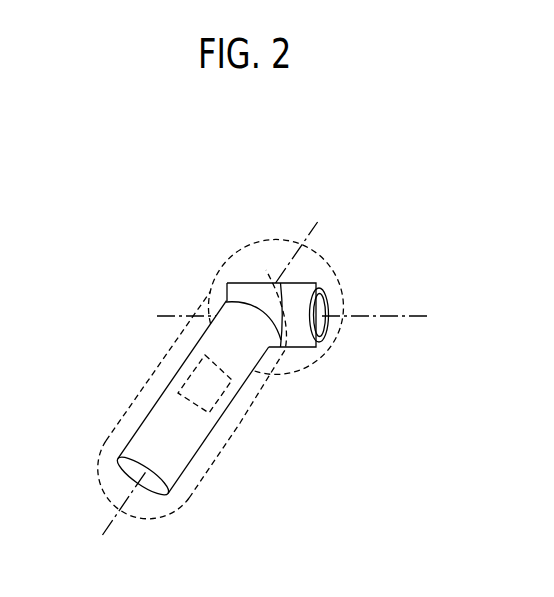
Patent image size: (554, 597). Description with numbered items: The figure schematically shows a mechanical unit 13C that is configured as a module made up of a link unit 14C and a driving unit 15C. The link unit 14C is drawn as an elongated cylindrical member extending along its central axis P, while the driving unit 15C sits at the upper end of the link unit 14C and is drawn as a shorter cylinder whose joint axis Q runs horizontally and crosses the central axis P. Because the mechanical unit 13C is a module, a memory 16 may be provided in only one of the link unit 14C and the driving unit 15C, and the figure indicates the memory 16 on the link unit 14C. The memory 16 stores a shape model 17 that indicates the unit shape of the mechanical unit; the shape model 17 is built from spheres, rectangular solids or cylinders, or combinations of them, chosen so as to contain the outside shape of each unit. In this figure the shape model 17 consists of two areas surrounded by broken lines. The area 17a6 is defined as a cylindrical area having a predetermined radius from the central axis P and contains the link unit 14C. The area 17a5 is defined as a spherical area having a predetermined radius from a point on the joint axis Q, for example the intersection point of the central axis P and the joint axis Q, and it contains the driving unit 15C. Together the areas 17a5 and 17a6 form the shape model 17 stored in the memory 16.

The mechanical unit 13C is at (282, 193).
The link unit 14C is at (194, 348).
The driving unit 15C is at (267, 283).
The memory 16 is at (239, 424).
The shape model 17 is at (465, 335).
The area 17a5 is at (340, 337).
The area 17a6 is at (256, 398).
The central axis P is at (202, 394).
The joint axis Q is at (305, 317).